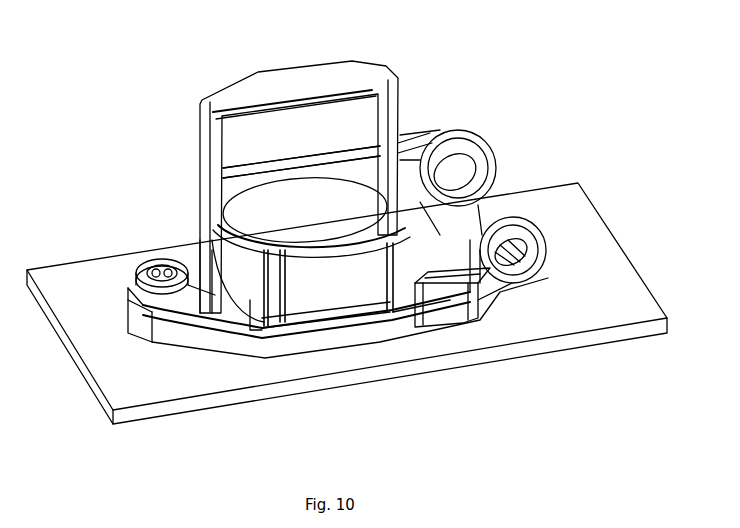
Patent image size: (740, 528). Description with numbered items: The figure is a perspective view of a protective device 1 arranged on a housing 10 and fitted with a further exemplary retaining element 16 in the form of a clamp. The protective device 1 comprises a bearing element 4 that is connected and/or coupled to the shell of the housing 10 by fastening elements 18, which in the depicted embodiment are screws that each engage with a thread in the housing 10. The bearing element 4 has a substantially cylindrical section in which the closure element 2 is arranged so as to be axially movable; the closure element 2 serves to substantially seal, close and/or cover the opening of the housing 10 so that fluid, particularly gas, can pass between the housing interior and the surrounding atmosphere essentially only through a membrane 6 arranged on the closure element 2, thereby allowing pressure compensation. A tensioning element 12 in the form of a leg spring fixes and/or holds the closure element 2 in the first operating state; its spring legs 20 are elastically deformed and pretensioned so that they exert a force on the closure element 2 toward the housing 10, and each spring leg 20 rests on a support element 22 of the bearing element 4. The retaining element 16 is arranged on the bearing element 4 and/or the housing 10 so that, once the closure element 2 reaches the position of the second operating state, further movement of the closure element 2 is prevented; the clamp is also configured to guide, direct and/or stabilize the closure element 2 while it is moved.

The protective device 1 is at (589, 95).
The closure element 2 is at (198, 228).
The bearing element 4 is at (352, 290).
The membrane 6 is at (306, 226).
The housing 10 is at (596, 248).
The tensioning element 12 is at (480, 148).
The retaining element 16 is at (400, 82).
The fastening element 18 is at (150, 268).
The spring leg 20 is at (340, 157).
The support element 22 is at (256, 330).